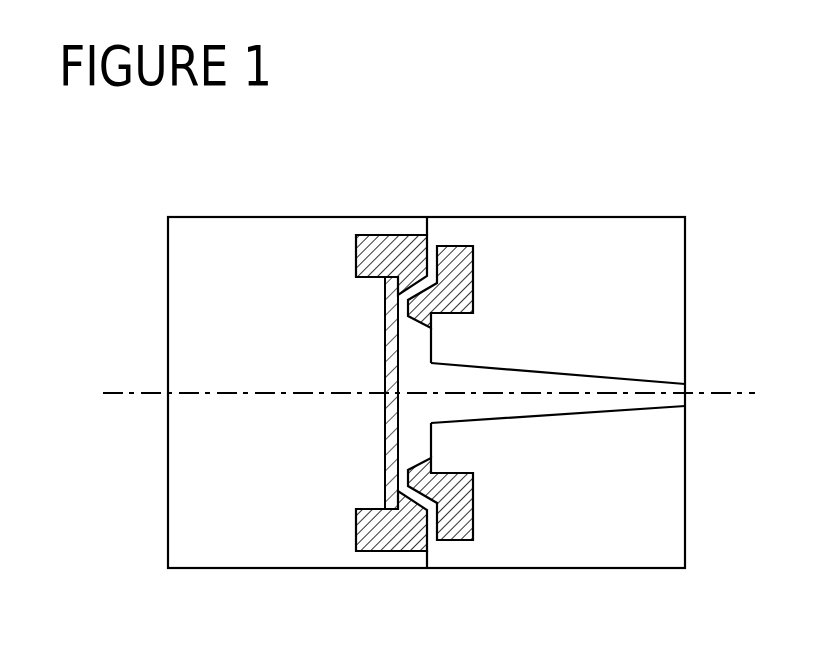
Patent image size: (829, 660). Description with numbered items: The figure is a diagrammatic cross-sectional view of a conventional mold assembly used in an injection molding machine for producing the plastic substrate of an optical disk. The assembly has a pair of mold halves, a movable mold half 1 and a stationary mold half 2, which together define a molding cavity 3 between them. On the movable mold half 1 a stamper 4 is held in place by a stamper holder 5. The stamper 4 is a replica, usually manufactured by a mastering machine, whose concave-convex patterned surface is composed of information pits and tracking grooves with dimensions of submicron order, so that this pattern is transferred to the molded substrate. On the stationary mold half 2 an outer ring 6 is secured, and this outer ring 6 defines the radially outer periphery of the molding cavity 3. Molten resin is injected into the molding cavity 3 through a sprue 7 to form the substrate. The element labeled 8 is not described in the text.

The movable mold half 1 is at (283, 373).
The stationary mold half 2 is at (573, 237).
The molding cavity 3 is at (416, 449).
The stamper 4 is at (388, 456).
The stamper holder 5 is at (388, 552).
The outer ring 6 is at (474, 522).
The sprue 7 is at (627, 387).
The electrode lead 8 is at (426, 218).